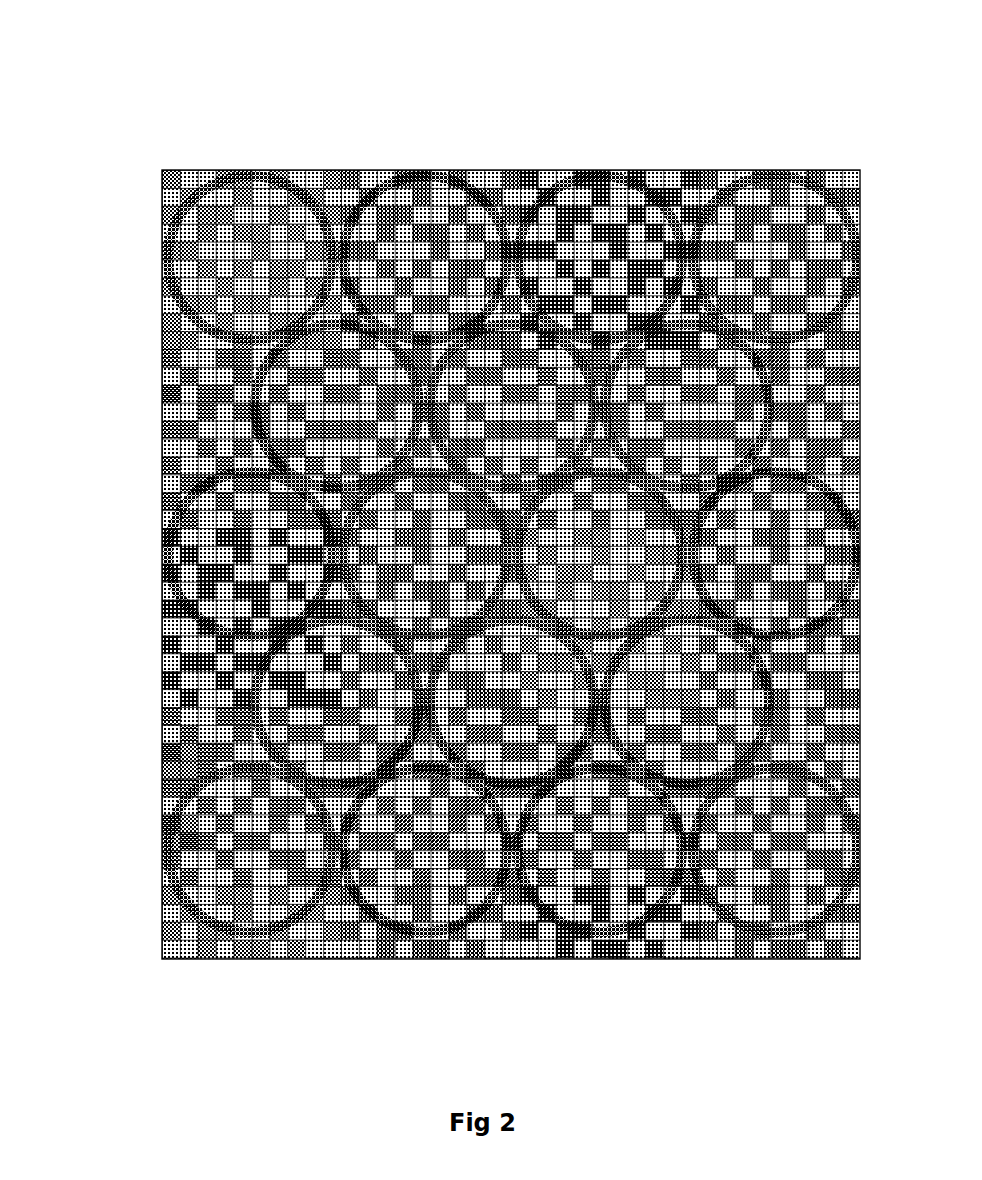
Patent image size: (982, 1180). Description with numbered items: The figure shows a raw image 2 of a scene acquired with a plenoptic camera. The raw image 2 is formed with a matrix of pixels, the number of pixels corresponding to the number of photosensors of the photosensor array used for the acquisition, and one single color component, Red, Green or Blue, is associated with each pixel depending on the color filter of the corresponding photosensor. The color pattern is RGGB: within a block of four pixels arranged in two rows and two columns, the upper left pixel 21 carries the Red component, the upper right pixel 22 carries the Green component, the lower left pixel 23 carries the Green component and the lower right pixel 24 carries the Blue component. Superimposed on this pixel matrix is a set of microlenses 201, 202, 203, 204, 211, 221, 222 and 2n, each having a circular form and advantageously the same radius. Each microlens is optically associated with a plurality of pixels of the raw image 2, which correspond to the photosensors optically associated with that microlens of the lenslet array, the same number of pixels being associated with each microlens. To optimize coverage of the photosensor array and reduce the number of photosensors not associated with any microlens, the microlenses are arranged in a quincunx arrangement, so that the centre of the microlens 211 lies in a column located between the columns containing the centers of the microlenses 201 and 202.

The raw image 2 is at (449, 563).
The microlens 201 is at (182, 170).
The microlens 202 is at (377, 170).
The microlens 203 is at (567, 170).
The microlens 204 is at (780, 171).
The microlens 2n is at (767, 950).
The microlens 211 is at (163, 323).
The microlens 221 is at (162, 500).
The microlens 222 is at (163, 385).
The upper right pixel 22 is at (162, 763).
The upper left pixel 21 is at (162, 827).
The lower left pixel 23 is at (162, 852).
The lower right pixel 24 is at (180, 960).